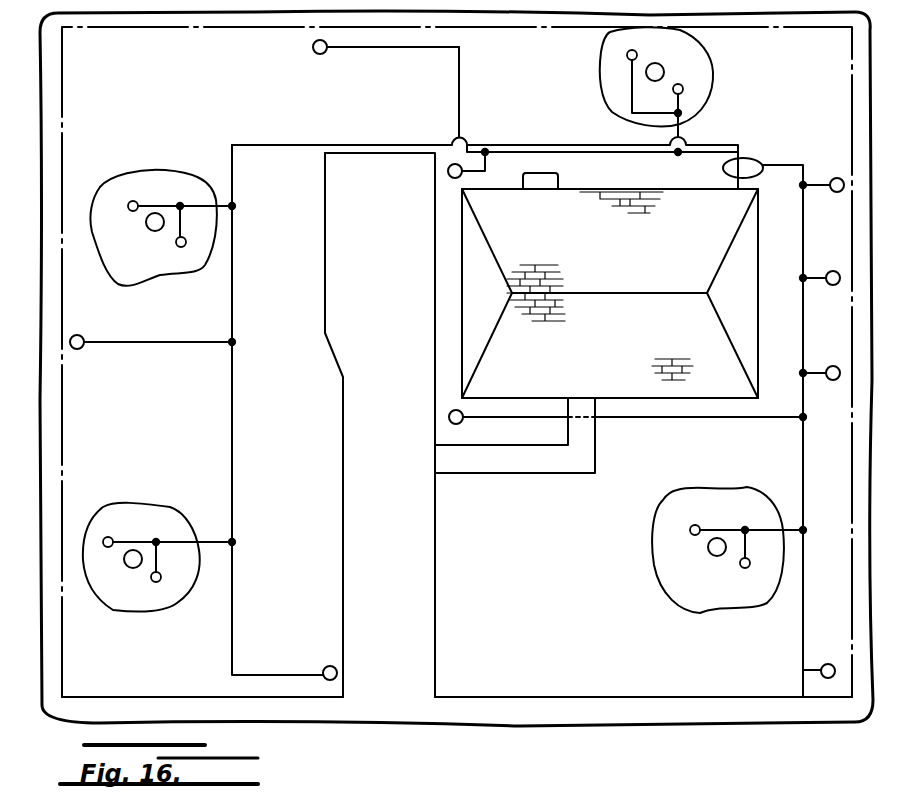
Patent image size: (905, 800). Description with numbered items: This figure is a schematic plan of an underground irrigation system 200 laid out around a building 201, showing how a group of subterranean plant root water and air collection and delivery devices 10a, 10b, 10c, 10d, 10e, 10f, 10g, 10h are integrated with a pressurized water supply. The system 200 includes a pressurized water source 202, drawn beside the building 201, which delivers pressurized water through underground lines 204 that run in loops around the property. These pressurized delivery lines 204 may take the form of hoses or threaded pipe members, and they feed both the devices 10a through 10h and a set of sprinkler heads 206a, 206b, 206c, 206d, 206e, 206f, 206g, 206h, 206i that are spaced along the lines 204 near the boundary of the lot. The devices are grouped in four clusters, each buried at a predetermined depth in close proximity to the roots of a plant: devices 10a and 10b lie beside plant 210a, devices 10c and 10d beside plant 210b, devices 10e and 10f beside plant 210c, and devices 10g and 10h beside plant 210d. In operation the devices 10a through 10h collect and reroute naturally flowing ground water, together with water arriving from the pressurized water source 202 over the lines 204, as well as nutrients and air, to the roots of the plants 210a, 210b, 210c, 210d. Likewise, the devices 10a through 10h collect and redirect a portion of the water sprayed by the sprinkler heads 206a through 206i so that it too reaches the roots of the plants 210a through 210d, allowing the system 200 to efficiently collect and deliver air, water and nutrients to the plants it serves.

The underground irrigation system 200 is at (770, 130).
The building 201 is at (470, 296).
The pressurized water source 202 is at (753, 157).
The underground lines 204 is at (457, 92).
The sprinkler head 206a is at (314, 52).
The sprinkler head 206b is at (448, 171).
The sprinkler head 206c is at (834, 178).
The sprinkler head 206d is at (826, 273).
The sprinkler head 206e is at (833, 383).
The sprinkler head 206f is at (821, 664).
The sprinkler head 206g is at (323, 668).
The sprinkler head 206h is at (449, 417).
The sprinkler head 206i is at (80, 349).
The subterranean plant root water and air collection and delivery device 10a is at (132, 200).
The subterranean plant root water and air collection and delivery device 10b is at (187, 242).
The subterranean plant root water and air collection and delivery device 10c is at (627, 55).
The subterranean plant root water and air collection and delivery device 10d is at (683, 86).
The subterranean plant root water and air collection and delivery device 10e is at (690, 530).
The subterranean plant root water and air collection and delivery device 10f is at (740, 567).
The subterranean plant root water and air collection and delivery device 10g is at (158, 583).
The subterranean plant root water and air collection and delivery device 10h is at (108, 537).
The plant 210a is at (155, 230).
The plant 210b is at (646, 72).
The plant 210c is at (708, 547).
The plant 210d is at (130, 568).